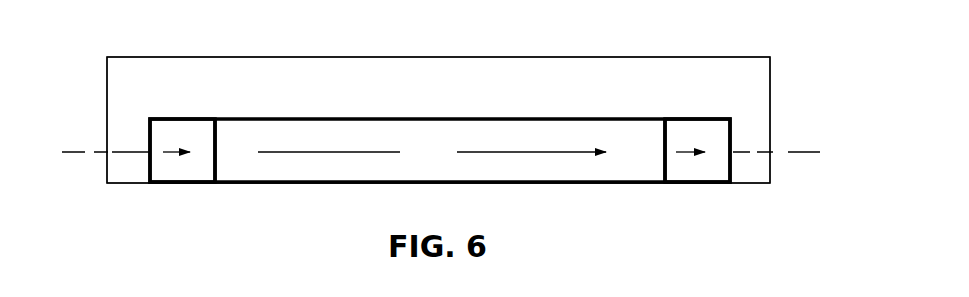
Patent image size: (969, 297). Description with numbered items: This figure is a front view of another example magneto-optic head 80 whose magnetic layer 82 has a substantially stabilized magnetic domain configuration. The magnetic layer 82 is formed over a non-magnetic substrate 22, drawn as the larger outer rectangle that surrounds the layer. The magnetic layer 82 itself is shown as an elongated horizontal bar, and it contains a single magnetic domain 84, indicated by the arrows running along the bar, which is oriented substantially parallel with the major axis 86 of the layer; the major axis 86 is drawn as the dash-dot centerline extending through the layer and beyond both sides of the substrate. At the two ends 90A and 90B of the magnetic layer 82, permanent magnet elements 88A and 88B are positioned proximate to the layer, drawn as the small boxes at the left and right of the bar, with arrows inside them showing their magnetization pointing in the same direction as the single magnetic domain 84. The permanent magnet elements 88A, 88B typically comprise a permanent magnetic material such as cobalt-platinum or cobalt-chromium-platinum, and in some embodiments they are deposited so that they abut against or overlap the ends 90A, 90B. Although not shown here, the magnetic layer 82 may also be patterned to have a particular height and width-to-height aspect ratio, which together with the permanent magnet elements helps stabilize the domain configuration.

The magneto-optic head 80 is at (84, 57).
The non-magnetic substrate 22 is at (118, 108).
The magnetic layer 82 is at (388, 140).
The single magnetic domain 84 is at (441, 161).
The major axis 86 is at (787, 152).
The permanent magnet element 88A is at (183, 135).
The permanent magnet element 88B is at (697, 135).
The end of magnetic layer 90A is at (236, 112).
The end of magnetic layer 90B is at (636, 112).